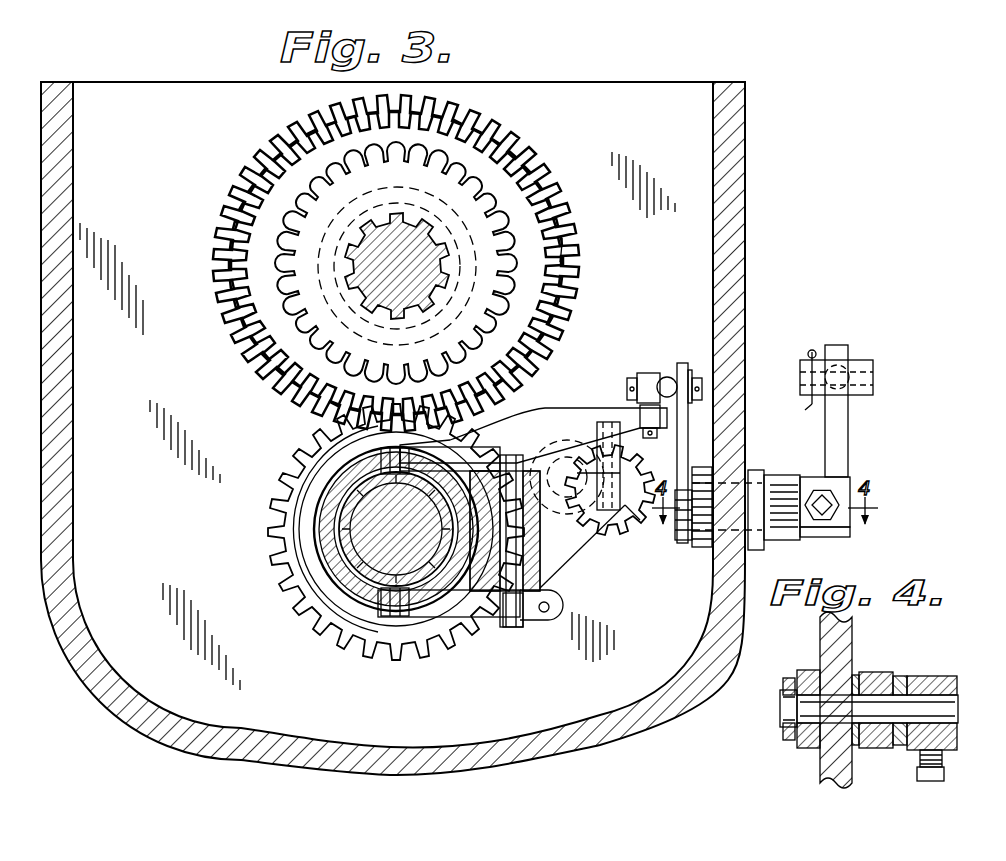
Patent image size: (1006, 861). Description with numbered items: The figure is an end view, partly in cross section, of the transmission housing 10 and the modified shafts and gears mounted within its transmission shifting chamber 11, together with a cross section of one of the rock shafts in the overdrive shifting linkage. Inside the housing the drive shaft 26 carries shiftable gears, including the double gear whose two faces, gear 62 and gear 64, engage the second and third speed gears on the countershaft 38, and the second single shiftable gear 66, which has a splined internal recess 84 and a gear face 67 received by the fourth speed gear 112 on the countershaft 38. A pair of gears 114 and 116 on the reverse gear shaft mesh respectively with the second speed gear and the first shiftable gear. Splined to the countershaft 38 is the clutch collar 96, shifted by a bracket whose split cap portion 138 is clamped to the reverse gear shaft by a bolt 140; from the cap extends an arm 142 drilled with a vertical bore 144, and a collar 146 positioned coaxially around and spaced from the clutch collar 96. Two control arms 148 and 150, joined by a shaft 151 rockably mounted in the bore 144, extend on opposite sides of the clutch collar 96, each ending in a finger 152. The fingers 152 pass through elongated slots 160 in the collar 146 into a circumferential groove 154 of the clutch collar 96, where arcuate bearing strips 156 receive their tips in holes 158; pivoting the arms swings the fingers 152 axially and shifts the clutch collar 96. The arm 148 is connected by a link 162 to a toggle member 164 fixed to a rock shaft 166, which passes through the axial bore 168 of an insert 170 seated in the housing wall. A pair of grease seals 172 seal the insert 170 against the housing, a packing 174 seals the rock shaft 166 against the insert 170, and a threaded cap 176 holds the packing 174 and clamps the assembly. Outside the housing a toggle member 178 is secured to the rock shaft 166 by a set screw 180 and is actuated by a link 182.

In FIG. 3, the transmission housing 10 is at (200, 758).
In FIG. 3, the transmission shifting chamber 11 is at (222, 672).
In FIG. 3, the drive shaft 26 is at (430, 233).
In FIG. 3, the countershaft 38 is at (380, 529).
In FIG. 3, the gear face of double shiftable gear 62 is at (488, 128).
In FIG. 3, the gear face of double shiftable gear 64 is at (510, 145).
In FIG. 3, the second single shiftable gear 66 is at (498, 313).
In FIG. 3, the gear face 67 is at (567, 247).
In FIG. 3, the splined internal recess 84 is at (470, 357).
In FIG. 3, the clutch collar 96 is at (330, 520).
In FIG. 3, the fourth speed gear 112 is at (375, 652).
In FIG. 3, the gear 114 is at (560, 378).
In FIG. 3, the gear 116 is at (600, 360).
In FIG. 3, the cap portion 138 is at (625, 537).
In FIG. 3, the bolt 140 is at (622, 452).
In FIG. 3, the arm 142 is at (524, 575).
In FIG. 3, the vertical bore 144 is at (560, 606).
In FIG. 3, the collar 146 is at (345, 553).
In FIG. 3, the control arm 148 is at (545, 428).
In FIG. 3, the control arm 150 is at (483, 618).
In FIG. 3, the shaft 151 is at (525, 552).
In FIG. 3, the finger 152 is at (380, 455).
In FIG. 3, the circumferential groove 154 is at (320, 548).
In FIG. 3, the arcuate bearing strip 156 is at (340, 500).
In FIG. 3, the hole 158 is at (438, 618).
In FIG. 3, the elongated slot 160 is at (395, 470).
In FIG. 3, the link 162 is at (665, 372).
In FIG. 3, the toggle member 164 is at (690, 445).
In FIG. 4, the toggle member 164 is at (788, 680).
In FIG. 3, the rock shaft 166 is at (677, 520).
In FIG. 4, the rock shaft 166 is at (783, 712).
In FIG. 4, the axial bore 168 is at (862, 678).
In FIG. 3, the insert 170 is at (702, 548).
In FIG. 4, the insert 170 is at (805, 670).
In FIG. 4, the grease seal 172 is at (817, 748).
In FIG. 4, the packing 174 is at (900, 680).
In FIG. 3, the cap 176 is at (780, 535).
In FIG. 4, the cap 176 is at (890, 747).
In FIG. 3, the toggle member 178 is at (835, 445).
In FIG. 4, the toggle member 178 is at (915, 690).
In FIG. 3, the set screw 180 is at (830, 505).
In FIG. 4, the set screw 180 is at (950, 780).
In FIG. 3, the link 182 is at (852, 362).